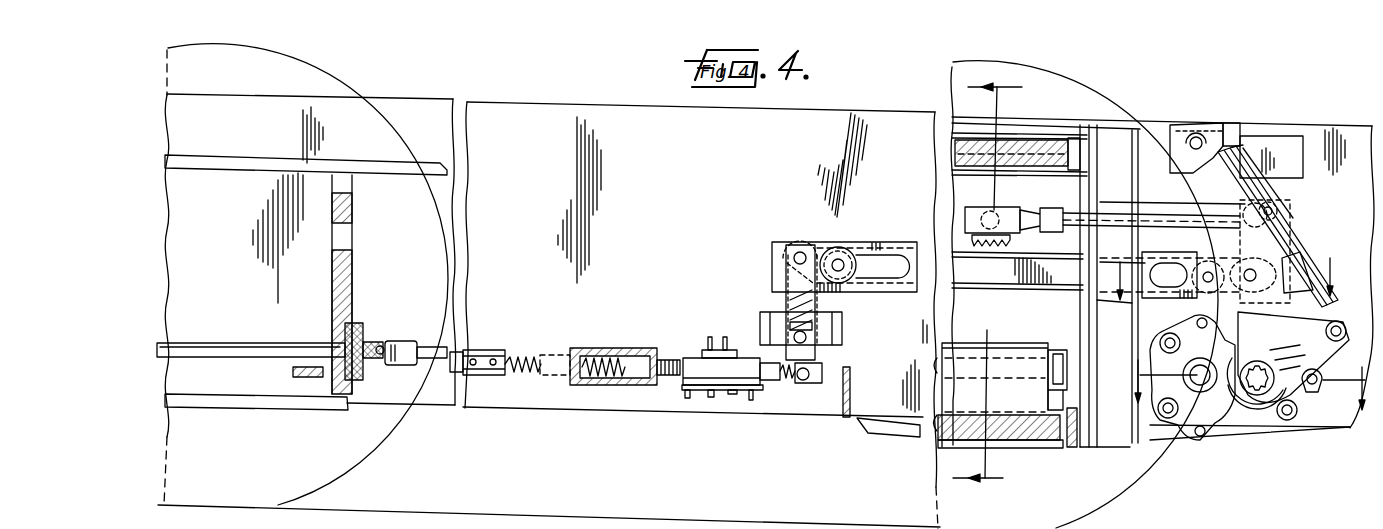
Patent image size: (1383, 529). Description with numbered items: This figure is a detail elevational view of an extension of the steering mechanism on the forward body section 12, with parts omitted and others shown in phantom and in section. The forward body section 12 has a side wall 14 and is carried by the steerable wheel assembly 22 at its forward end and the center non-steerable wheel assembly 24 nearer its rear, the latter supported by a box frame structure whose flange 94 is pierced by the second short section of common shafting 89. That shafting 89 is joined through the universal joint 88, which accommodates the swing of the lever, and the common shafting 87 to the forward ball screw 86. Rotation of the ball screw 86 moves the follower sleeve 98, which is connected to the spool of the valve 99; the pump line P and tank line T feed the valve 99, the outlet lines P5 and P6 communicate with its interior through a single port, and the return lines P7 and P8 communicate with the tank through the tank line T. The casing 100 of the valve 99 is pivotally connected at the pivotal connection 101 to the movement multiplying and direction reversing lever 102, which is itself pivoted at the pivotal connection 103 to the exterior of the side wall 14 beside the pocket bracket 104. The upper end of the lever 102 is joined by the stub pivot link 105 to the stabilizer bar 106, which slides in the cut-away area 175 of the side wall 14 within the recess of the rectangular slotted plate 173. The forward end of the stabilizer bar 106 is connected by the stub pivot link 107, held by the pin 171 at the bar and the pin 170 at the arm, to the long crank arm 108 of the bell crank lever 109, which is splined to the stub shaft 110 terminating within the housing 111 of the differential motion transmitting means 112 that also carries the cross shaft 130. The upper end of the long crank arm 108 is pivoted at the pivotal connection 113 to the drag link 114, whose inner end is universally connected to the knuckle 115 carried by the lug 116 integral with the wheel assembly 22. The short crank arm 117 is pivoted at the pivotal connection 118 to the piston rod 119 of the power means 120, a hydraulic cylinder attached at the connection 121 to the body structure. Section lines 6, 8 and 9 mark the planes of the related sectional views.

The section line 6- 6 is at (1251, 374).
The section line 8- 8 is at (1223, 266).
The section line 9- 9 is at (993, 287).
The forward body section 12 is at (918, 138).
The side wall 14 is at (542, 170).
The steerable wheel assembly 22 is at (1120, 497).
The non-steerable wheel assembly 24 is at (333, 483).
The forward ball screw 86 is at (520, 357).
The common shafting 87 is at (464, 350).
The universal joint 88 is at (383, 343).
The second short section of common shafting 89 is at (229, 342).
The flange 94 is at (352, 265).
The follower sleeve 98 is at (622, 350).
The valve 99 is at (696, 353).
The casing 100 is at (723, 390).
The pivotal connection 101 is at (804, 381).
The movement multiplying and direction reversing lever 102 is at (815, 295).
The pivotal connection 103 is at (805, 340).
The pocket bracket 104 is at (835, 332).
The stub pivot link 105 is at (822, 243).
The stabilizer bar 106 is at (1020, 290).
The stub pivot link 107 is at (1210, 262).
The long crank arm 108 is at (1205, 316).
The bell crank lever 109 is at (1264, 412).
The stub shaft 110 is at (1253, 395).
The housing 111 is at (1260, 422).
The differential motion transmitting means 112 is at (1187, 417).
The pivotal connection 113 is at (1277, 204).
The drag link 114 is at (1182, 206).
The knuckle 115 is at (1005, 206).
The lug 116 is at (1012, 241).
The short crank arm 117 is at (1303, 392).
The pivotal connection 118 is at (1337, 321).
The piston rod 119 is at (1290, 318).
The power means 120 is at (1293, 218).
The connection 121 is at (1195, 122).
The cross shaft 130 is at (1212, 350).
The pin 170 is at (1255, 262).
The pin 171 is at (1195, 275).
The rectangular slotted plate 173 is at (1150, 298).
The cut-away area 175 is at (966, 283).
The pump line P is at (708, 337).
The tank line T is at (727, 336).
The outlet line P5 is at (758, 391).
The outlet line P6 is at (752, 397).
The return line P7 is at (685, 393).
The return line P8 is at (695, 394).